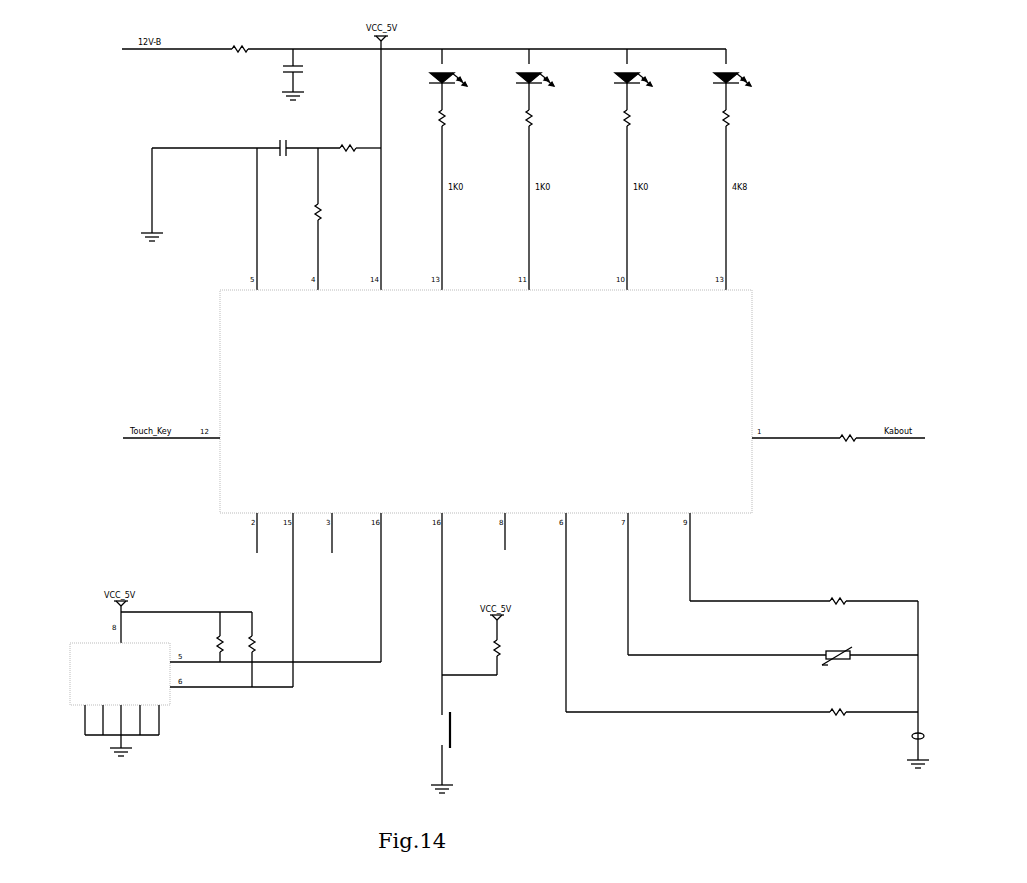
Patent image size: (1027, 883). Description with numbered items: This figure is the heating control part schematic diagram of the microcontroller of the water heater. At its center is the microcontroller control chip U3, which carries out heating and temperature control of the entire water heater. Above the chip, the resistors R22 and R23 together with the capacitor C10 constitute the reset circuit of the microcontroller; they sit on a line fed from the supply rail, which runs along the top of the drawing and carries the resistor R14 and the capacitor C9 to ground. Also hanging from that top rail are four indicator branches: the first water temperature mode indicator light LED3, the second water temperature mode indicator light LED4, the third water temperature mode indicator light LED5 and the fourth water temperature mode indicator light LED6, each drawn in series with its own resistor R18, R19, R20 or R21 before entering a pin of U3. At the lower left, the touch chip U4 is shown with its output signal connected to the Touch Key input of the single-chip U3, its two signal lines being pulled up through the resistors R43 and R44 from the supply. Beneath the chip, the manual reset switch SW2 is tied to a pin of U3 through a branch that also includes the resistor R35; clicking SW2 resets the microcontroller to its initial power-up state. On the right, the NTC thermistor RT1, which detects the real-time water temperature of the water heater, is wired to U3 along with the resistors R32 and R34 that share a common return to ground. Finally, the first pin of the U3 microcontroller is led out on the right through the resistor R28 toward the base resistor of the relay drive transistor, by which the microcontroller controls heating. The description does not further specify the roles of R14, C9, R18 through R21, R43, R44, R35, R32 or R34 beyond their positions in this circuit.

The resistor R14 is at (238, 44).
The capacitor C9 is at (302, 74).
The reset circuit capacitor C10 is at (281, 142).
The reset circuit resistor R22 is at (347, 143).
The reset circuit resistor R23 is at (326, 219).
The first water temperature mode indicator light LED3 is at (461, 79).
The second water temperature mode indicator light LED4 is at (548, 79).
The third water temperature mode indicator light LED5 is at (646, 79).
The fourth water temperature mode indicator light LED6 is at (745, 79).
The resistor R18 is at (450, 200).
The resistor R19 is at (537, 200).
The resistor R20 is at (635, 200).
The resistor R21 is at (734, 200).
The microcontroller control chip U3 is at (486, 401).
The touch chip U4 is at (120, 699).
The pull-up resistor R43 is at (229, 637).
The pull-up resistor R44 is at (261, 649).
The resistor R35 is at (506, 650).
The manual reset switch SW2 is at (452, 752).
The resistor R32 is at (837, 596).
The NTC thermistor RT1 is at (854, 655).
The resistor R34 is at (837, 707).
The resistor R28 is at (847, 433).